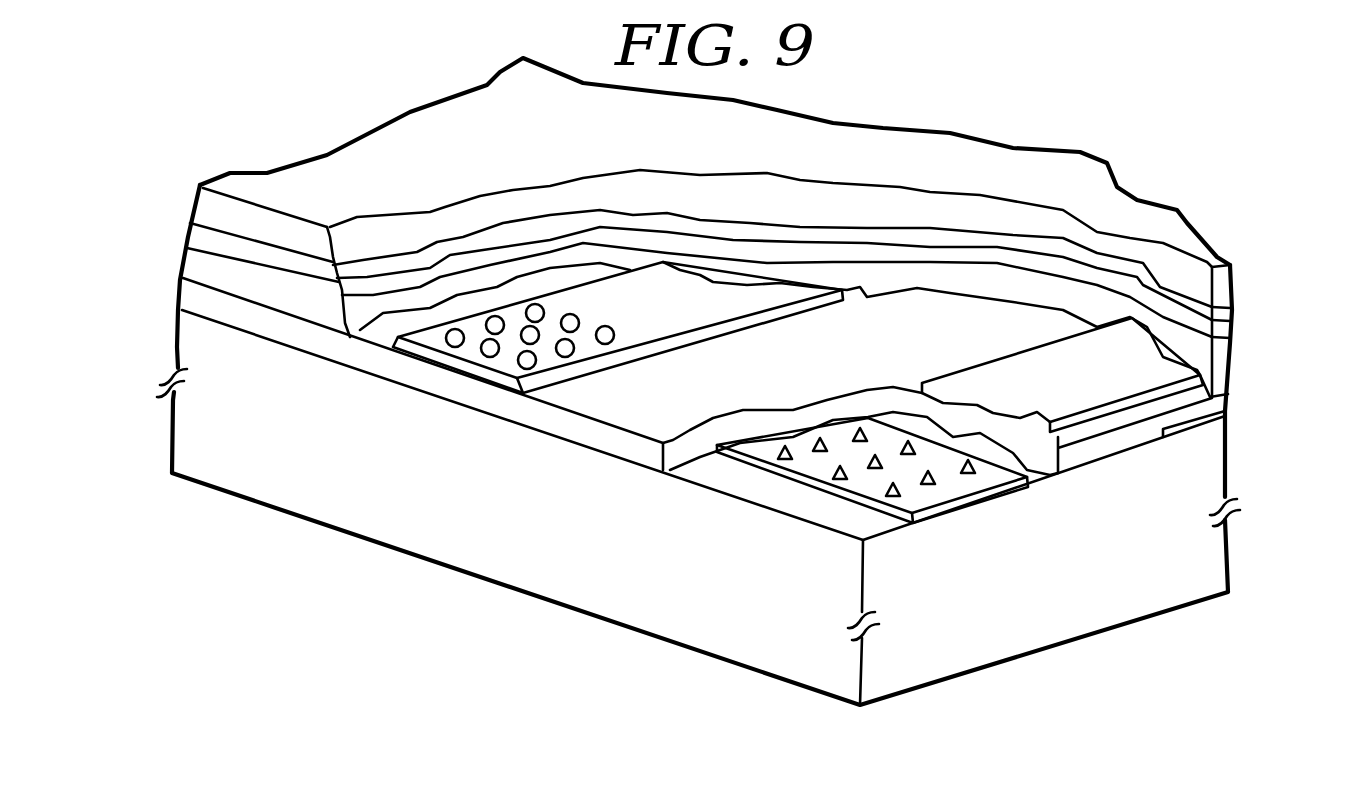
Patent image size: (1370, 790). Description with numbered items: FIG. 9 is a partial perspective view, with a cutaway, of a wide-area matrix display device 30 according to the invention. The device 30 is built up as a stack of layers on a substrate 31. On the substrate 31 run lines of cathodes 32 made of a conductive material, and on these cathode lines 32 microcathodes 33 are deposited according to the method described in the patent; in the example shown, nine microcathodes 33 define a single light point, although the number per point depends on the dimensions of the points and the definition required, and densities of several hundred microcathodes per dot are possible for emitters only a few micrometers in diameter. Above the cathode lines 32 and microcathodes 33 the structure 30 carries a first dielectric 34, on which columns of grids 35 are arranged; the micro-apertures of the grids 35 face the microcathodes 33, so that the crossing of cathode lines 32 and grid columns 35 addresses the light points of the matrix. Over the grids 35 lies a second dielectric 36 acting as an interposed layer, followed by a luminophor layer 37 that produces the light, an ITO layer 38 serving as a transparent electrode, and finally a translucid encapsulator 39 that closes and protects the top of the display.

The matrix display device 30 is at (283, 593).
The substrate 31 is at (968, 653).
The lines of cathodes 32 is at (1228, 425).
The microcathodes 33 is at (917, 498).
The first dielectric 34 is at (583, 427).
The columns of grids 35 is at (677, 320).
The second dielectric 36 is at (197, 270).
The luminophor layer 37 is at (1222, 327).
The ITO layer 38 is at (187, 225).
The translucid encapsulator 39 is at (1232, 282).